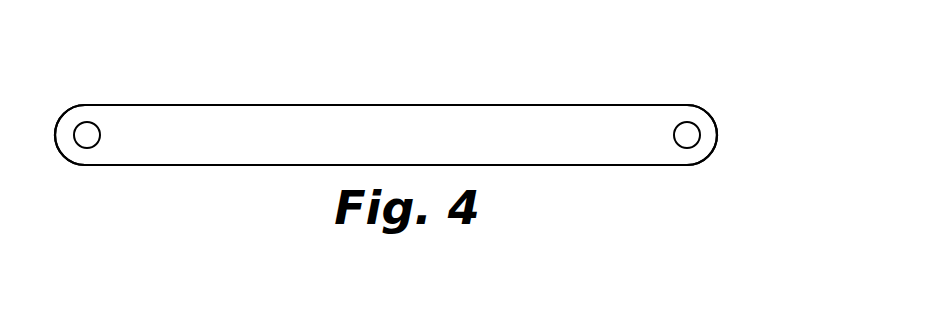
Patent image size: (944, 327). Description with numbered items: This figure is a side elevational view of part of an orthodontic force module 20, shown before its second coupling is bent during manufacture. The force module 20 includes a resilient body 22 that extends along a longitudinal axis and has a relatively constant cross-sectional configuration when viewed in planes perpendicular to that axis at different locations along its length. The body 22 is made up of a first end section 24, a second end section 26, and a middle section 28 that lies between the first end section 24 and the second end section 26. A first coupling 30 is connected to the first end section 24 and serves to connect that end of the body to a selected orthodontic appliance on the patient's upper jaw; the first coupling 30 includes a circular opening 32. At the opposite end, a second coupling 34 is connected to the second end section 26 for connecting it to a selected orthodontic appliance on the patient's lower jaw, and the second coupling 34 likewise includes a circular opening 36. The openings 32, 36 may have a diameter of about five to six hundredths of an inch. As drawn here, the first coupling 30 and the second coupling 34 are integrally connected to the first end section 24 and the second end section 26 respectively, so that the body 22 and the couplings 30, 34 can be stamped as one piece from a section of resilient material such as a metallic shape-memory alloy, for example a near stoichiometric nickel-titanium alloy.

The force module 20 is at (710, 48).
The resilient body 22 is at (377, 105).
The first end section 24 is at (133, 117).
The second end section 26 is at (628, 117).
The middle section 28 is at (485, 117).
The first coupling 30 is at (103, 113).
The circular opening 32 is at (85, 134).
The second coupling 34 is at (697, 103).
The circular opening 36 is at (685, 139).